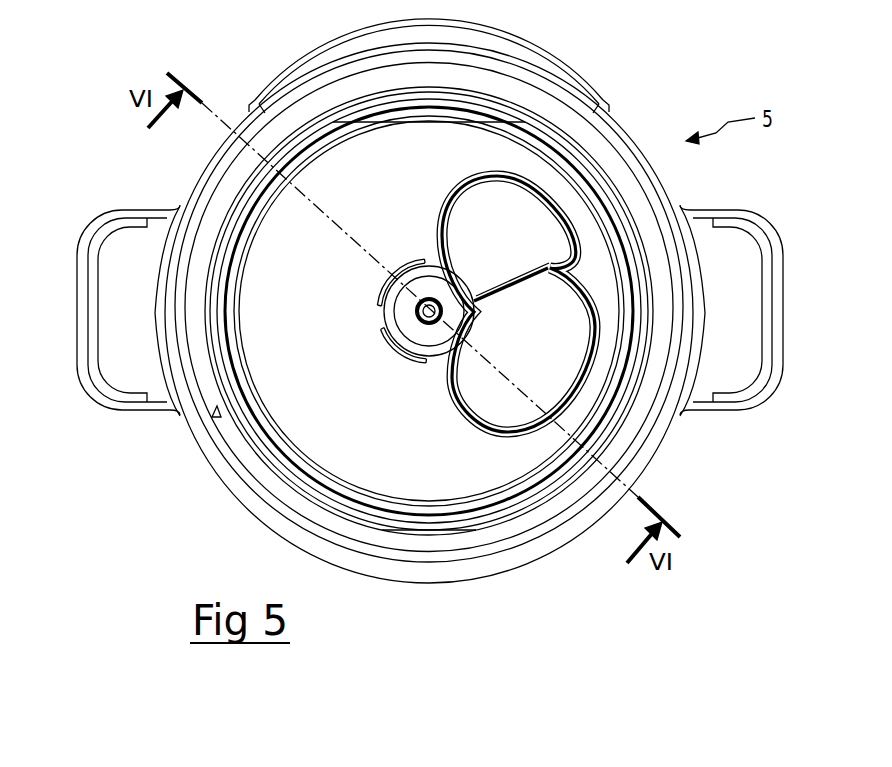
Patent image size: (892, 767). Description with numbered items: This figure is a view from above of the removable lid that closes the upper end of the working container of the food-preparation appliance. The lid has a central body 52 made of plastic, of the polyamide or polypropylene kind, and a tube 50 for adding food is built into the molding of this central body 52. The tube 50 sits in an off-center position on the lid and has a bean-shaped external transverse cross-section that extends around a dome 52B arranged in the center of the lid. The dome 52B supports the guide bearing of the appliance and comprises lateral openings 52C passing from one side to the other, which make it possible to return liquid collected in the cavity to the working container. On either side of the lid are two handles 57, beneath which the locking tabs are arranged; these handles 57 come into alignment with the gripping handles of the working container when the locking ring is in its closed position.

The tube for adding food 50 is at (543, 190).
The central body 52 is at (337, 157).
The dome 52B is at (396, 340).
The lateral openings 52C is at (425, 263).
The handles 57 is at (122, 247).